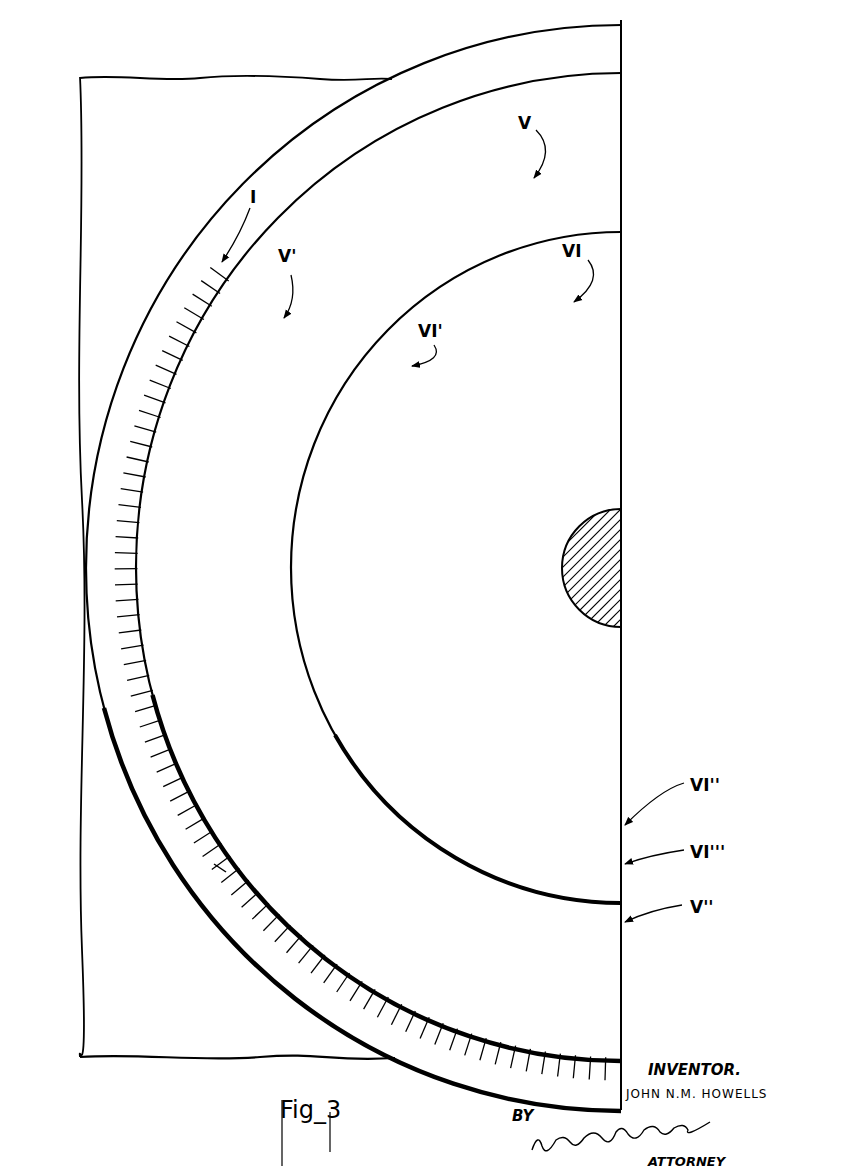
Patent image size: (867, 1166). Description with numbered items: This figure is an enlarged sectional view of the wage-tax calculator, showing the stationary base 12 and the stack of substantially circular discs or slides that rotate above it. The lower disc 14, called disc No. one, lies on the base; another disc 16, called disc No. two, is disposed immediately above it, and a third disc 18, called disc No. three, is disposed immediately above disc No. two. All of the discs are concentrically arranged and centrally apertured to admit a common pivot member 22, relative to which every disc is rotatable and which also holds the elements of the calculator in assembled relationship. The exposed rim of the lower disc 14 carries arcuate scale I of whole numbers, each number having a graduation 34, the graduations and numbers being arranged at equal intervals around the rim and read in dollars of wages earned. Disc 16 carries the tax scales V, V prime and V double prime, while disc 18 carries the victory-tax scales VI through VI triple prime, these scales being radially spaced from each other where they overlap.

The stationary base 12 is at (103, 940).
The lower disc (disc No. 1) 14 is at (610, 62).
The disc (disc No. 2) 16 is at (606, 134).
The third disc (disc No. 3) 18 is at (607, 265).
The common pivot member 22 is at (612, 540).
The graduation 34 is at (222, 868).